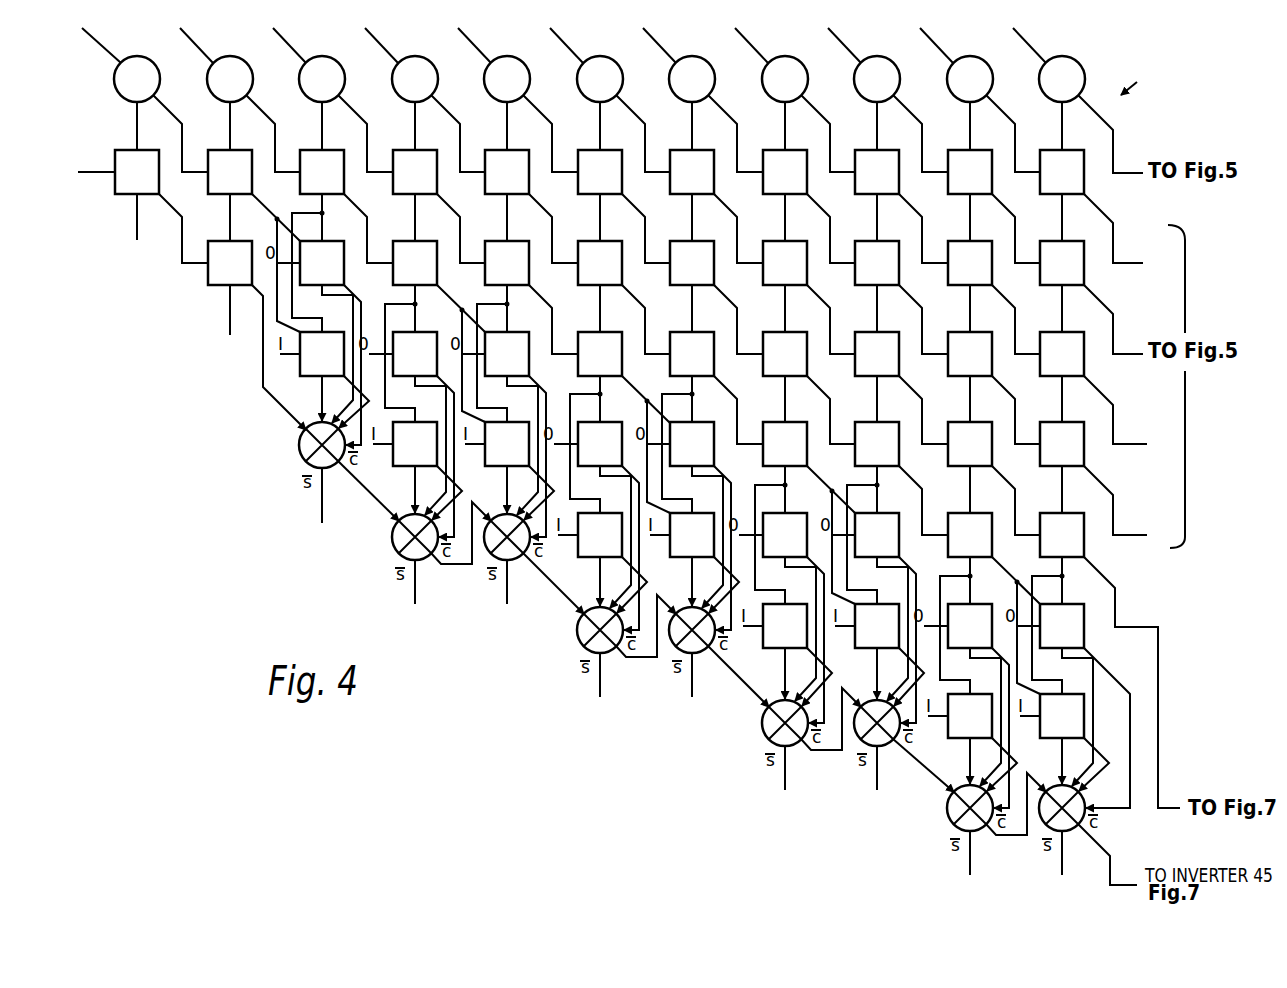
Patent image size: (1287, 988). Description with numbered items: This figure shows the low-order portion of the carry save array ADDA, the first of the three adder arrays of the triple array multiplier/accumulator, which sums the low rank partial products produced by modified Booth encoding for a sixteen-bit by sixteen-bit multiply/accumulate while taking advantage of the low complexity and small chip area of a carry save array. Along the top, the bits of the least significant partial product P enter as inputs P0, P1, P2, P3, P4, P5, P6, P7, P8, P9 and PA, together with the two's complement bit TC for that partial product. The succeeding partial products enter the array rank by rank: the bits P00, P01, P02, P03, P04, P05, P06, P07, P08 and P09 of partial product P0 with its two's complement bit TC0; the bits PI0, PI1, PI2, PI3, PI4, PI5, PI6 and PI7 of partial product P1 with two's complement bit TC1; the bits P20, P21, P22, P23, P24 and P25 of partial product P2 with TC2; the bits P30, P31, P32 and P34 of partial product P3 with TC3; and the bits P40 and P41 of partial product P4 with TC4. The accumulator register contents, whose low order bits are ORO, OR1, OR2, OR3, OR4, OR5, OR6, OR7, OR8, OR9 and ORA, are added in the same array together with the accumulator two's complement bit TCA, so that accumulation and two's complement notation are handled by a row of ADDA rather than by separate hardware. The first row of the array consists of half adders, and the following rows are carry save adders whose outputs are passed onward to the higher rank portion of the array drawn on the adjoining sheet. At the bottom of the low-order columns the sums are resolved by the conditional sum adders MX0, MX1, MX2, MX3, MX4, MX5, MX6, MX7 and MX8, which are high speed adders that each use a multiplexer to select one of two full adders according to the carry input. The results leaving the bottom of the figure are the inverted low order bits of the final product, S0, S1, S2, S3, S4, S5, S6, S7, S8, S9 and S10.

The partial product P bit P0 is at (137, 56).
The partial product P bit P1 is at (230, 56).
The partial product P bit P2 is at (322, 56).
The partial product P bit P3 is at (415, 56).
The partial product P bit P4 is at (507, 56).
The partial product P bit P5 is at (600, 56).
The partial product P bit P6 is at (692, 56).
The partial product P bit P7 is at (785, 56).
The partial product P bit P8 is at (877, 56).
The partial product P bit P9 is at (970, 56).
The partial product P bit PA is at (1062, 56).
The two's complement bit TC is at (97, 32).
The accumulator two's complement bit TCA is at (77, 172).
The carry save adder array ADDA is at (1136, 76).
The partial product P0 bit P00 is at (191, 32).
The partial product P0 bit P01 is at (284, 32).
The partial product P0 bit P02 is at (376, 32).
The partial product P0 bit P03 is at (469, 32).
The partial product P0 bit P04 is at (561, 32).
The partial product P0 bit P05 is at (654, 32).
The partial product P0 bit P06 is at (746, 32).
The partial product P0 bit P07 is at (839, 32).
The partial product P0 bit P08 is at (931, 32).
The partial product P0 bit P09 is at (1024, 32).
The accumulator register content bit ORO is at (115, 150).
The two's complement bit TC0 is at (208, 150).
The accumulator register content bit OR2 is at (300, 150).
The partial product P1 bit PI0 is at (393, 150).
The partial product P1 bit PI1 is at (485, 150).
The partial product P1 bit PI2 is at (578, 150).
The partial product P1 bit PI3 is at (670, 150).
The partial product P1 bit PI4 is at (763, 150).
The partial product P1 bit PI5 is at (855, 150).
The partial product P1 bit PI6 is at (948, 150).
The partial product P1 bit PI7 is at (1040, 150).
The accumulator register content bit OR1 is at (208, 241).
The two's complement bit TC1 is at (393, 241).
The accumulator register content bit OR4 is at (485, 241).
The partial product P2 bit P20 is at (578, 241).
The partial product P2 bit P21 is at (670, 241).
The partial product P2 bit P22 is at (763, 241).
The partial product P2 bit P23 is at (855, 241).
The partial product P2 bit P24 is at (948, 241).
The partial product P2 bit P25 is at (1040, 241).
The accumulator register content bit OR3 is at (393, 332).
The two's complement bit TC2 is at (578, 332).
The accumulator register content bit OR6 is at (670, 332).
The partial product P3 bit P30 is at (763, 332).
The partial product P3 bit P31 is at (855, 332).
The partial product P3 bit P32 is at (948, 332).
The partial product P3 bit P34 is at (1040, 332).
The accumulator register content bit OR5 is at (578, 422).
The two's complement bit TC3 is at (763, 422).
The accumulator register content bit OR8 is at (855, 422).
The partial product P4 bit P40 is at (948, 422).
The partial product P4 bit P41 is at (1040, 422).
The accumulator register content bit OR7 is at (763, 513).
The two's complement bit TC4 is at (948, 513).
The accumulator register content bit ORA is at (1040, 513).
The accumulator register content bit OR9 is at (948, 604).
The conditional sum adder MX0 is at (299, 445).
The conditional sum adder MX1 is at (399, 552).
The conditional sum adder MX2 is at (497, 517).
The conditional sum adder MX3 is at (578, 628).
The conditional sum adder MX4 is at (677, 609).
The conditional sum adder MX5 is at (763, 722).
The conditional sum adder MX6 is at (862, 703).
The conditional sum adder MX7 is at (947, 815).
The conditional sum adder MX8 is at (1048, 790).
The inverted low order product bit S0 is at (146, 247).
The inverted low order product bit S1 is at (239, 344).
The inverted low order product bit S2 is at (331, 539).
The inverted low order product bit S3 is at (424, 612).
The inverted low order product bit S4 is at (516, 612).
The inverted low order product bit S5 is at (609, 705).
The inverted low order product bit S6 is at (701, 705).
The inverted low order product bit S7 is at (794, 798).
The inverted low order product bit S8 is at (886, 798).
The inverted low order product bit S9 is at (979, 883).
The inverted low order product bit S10 is at (1074, 883).